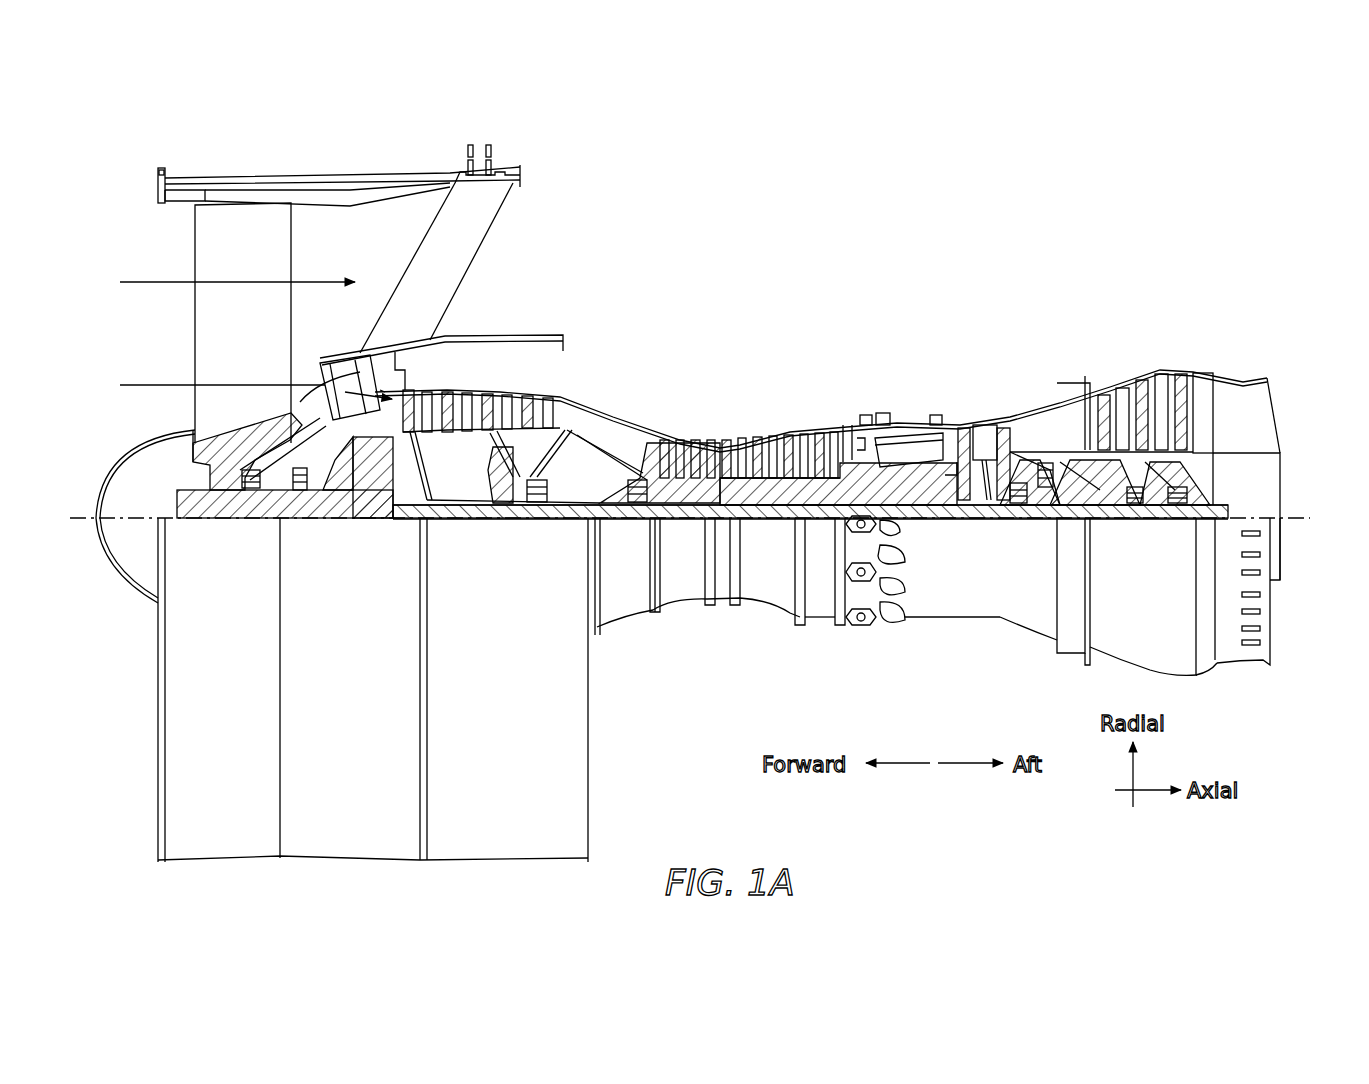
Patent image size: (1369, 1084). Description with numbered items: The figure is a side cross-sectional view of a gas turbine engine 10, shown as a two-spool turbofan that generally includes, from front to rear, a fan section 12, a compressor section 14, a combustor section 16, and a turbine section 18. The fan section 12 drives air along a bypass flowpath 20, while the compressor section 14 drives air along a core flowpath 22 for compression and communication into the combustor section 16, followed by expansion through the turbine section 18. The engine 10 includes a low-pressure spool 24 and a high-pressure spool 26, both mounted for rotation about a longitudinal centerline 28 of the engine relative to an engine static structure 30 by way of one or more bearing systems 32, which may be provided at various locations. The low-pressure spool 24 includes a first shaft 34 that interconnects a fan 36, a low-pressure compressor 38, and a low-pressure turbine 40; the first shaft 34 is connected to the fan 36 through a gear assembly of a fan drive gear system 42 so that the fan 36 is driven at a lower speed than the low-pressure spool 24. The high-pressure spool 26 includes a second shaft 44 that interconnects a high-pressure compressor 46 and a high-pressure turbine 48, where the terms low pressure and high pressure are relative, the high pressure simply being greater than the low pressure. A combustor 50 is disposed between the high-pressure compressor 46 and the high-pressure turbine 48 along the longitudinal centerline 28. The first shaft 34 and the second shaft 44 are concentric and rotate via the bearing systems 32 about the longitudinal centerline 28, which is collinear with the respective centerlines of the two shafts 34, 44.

The gas turbine engine 10 is at (1022, 230).
The fan section 12 is at (423, 155).
The compressor section 14 is at (430, 300).
The combustor section 16 is at (847, 300).
The turbine section 18 is at (1205, 300).
The bypass flowpath 20 is at (140, 282).
The core flowpath 22 is at (140, 385).
The low-pressure spool 24 is at (775, 522).
The high-pressure spool 26 is at (738, 500).
The longitudinal centerline 28 is at (1305, 498).
The engine static structure 30 is at (823, 622).
The bearing systems 32 is at (1040, 502).
The first shaft 34 is at (600, 512).
The fan 36 is at (245, 326).
The low-pressure compressor 38 is at (513, 400).
The low-pressure turbine 40 is at (1133, 373).
The fan drive gear system 42 is at (380, 527).
The second shaft 44 is at (960, 508).
The high-pressure compressor 46 is at (725, 432).
The high-pressure turbine 48 is at (987, 425).
The combustor 50 is at (900, 453).